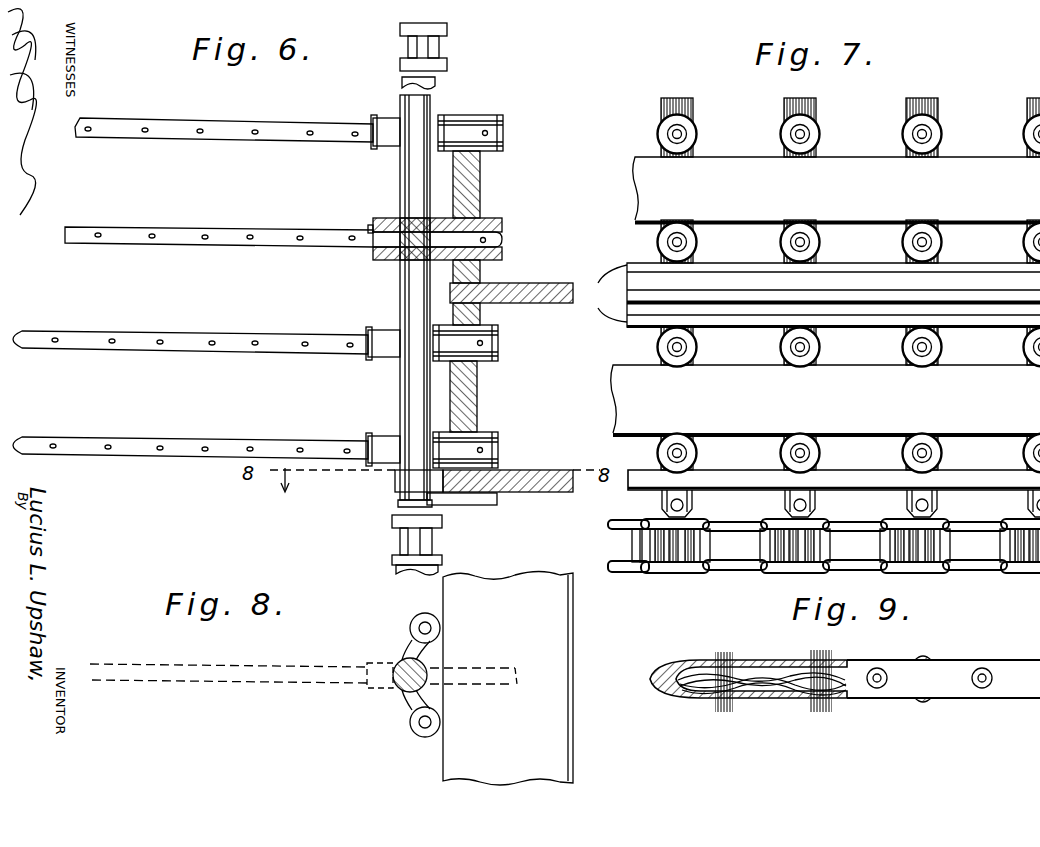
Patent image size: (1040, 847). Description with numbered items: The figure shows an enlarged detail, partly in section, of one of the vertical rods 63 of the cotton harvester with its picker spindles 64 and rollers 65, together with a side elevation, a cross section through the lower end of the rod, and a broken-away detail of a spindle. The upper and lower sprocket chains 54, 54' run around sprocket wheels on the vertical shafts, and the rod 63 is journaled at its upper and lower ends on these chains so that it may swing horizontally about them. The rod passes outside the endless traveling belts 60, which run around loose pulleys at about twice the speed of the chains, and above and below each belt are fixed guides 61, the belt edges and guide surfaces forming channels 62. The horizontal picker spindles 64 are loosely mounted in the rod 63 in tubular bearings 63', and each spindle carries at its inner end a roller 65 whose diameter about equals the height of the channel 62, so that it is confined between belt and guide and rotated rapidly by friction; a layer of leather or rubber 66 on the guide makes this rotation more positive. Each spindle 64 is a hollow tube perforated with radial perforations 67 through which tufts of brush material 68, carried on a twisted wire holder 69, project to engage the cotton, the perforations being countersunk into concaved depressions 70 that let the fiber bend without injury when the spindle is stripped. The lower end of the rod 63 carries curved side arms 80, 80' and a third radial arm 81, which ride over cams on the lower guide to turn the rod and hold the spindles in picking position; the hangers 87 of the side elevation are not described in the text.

In FIG. 6, the sprocket chain 54 is at (444, 56).
In FIG. 6, the lower sprocket chain 54' is at (438, 545).
In FIG. 7, the lower sprocket chain 54' is at (824, 556).
In FIG. 6, the endless belt 60 is at (480, 195).
In FIG. 7, the endless belt 60 is at (825, 296).
In FIG. 6, the fixed guide 61 is at (480, 277).
In FIG. 7, the fixed guide 61 is at (744, 478).
In FIG. 6, the channel 62 is at (500, 225).
In FIG. 7, the channel 62 is at (797, 348).
In FIG. 6, the vertical rod 63 is at (395, 301).
In FIG. 7, the vertical rod 63 is at (850, 284).
In FIG. 6, the tubular bearing 63' is at (372, 276).
In FIG. 6, the picker spindle 64 is at (257, 279).
In FIG. 8, the picker spindle 64 is at (303, 675).
In FIG. 9, the picker spindle 64 is at (990, 660).
In FIG. 6, the roller 65 is at (503, 135).
In FIG. 7, the roller 65 is at (1023, 137).
In FIG. 6, the layer of material 66 is at (452, 266).
In FIG. 7, the layer of material 66 is at (604, 293).
In FIG. 6, the perforation 67 is at (508, 471).
In FIG. 9, the perforation 67 is at (877, 668).
In FIG. 9, the brush material 68 is at (725, 655).
In FIG. 9, the twisted wire holder 69 is at (775, 678).
In FIG. 9, the concaved depression 70 is at (926, 646).
In FIG. 6, the radial arm 80 is at (400, 484).
In FIG. 8, the radial arm 80 is at (409, 627).
In FIG. 8, the radial arm 80' is at (408, 713).
In FIG. 6, the third arm 81 is at (480, 505).
In FIG. 8, the third arm 81 is at (428, 682).
In FIG. 7, the hanger 87 is at (793, 505).